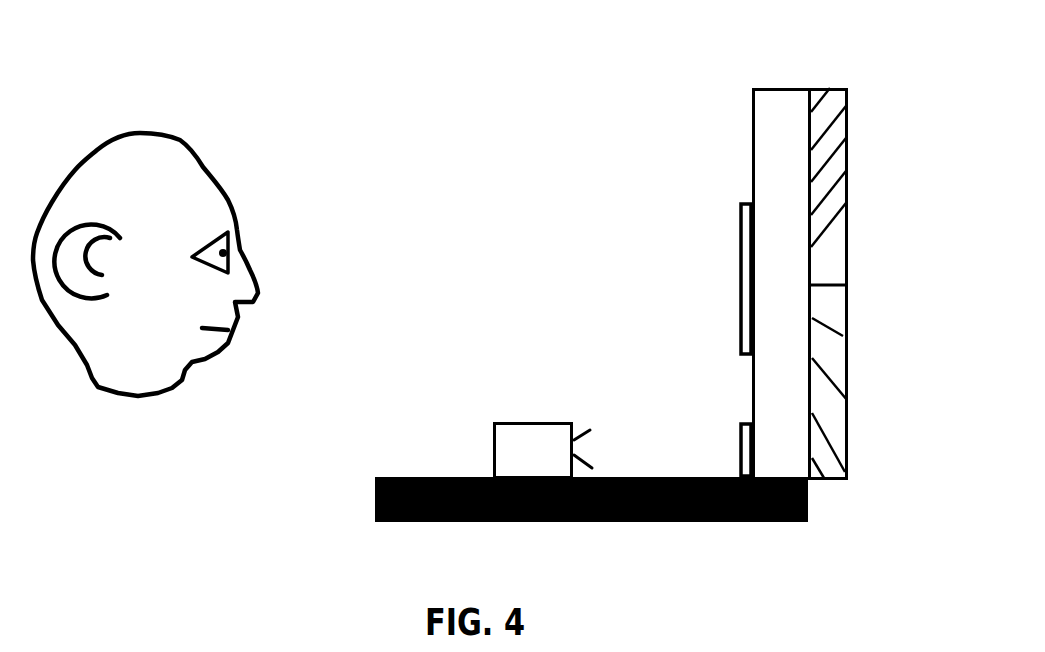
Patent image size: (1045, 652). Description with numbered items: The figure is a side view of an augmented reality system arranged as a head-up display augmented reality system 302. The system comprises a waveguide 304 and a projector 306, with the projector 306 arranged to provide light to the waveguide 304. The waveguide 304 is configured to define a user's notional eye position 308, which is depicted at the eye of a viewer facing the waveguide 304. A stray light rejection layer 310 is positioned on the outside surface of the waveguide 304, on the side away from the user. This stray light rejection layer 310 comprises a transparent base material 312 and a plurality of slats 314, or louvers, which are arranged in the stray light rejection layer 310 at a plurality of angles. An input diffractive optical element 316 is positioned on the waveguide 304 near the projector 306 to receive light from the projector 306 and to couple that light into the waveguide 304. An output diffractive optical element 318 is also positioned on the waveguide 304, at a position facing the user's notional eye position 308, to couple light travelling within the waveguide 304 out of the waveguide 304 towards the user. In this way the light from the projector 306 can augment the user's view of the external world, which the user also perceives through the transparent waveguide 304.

The head-up display augmented reality system 302 is at (258, 234).
The waveguide 304 is at (770, 132).
The projector 306 is at (513, 452).
The user's notional eye position 308 is at (230, 245).
The stray light rejection layer 310 is at (878, 252).
The transparent base material 312 is at (835, 258).
The plurality of slats 314 is at (835, 330).
The input diffractive optical element 316 is at (737, 447).
The output diffractive optical element 318 is at (738, 338).